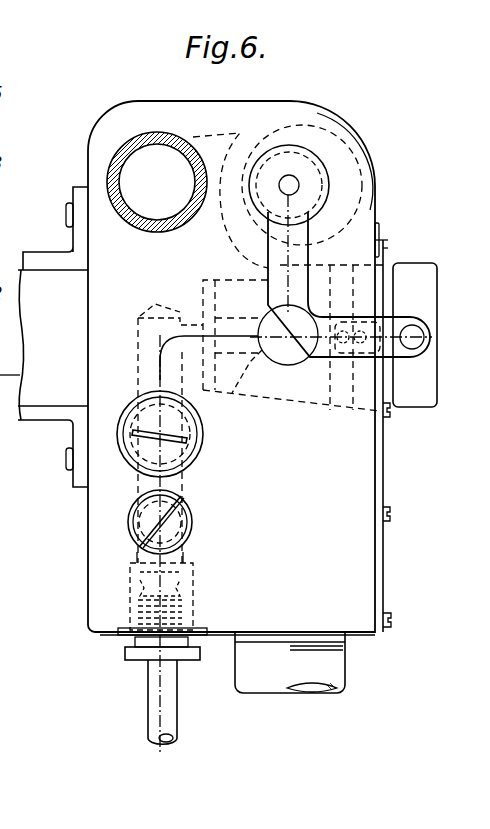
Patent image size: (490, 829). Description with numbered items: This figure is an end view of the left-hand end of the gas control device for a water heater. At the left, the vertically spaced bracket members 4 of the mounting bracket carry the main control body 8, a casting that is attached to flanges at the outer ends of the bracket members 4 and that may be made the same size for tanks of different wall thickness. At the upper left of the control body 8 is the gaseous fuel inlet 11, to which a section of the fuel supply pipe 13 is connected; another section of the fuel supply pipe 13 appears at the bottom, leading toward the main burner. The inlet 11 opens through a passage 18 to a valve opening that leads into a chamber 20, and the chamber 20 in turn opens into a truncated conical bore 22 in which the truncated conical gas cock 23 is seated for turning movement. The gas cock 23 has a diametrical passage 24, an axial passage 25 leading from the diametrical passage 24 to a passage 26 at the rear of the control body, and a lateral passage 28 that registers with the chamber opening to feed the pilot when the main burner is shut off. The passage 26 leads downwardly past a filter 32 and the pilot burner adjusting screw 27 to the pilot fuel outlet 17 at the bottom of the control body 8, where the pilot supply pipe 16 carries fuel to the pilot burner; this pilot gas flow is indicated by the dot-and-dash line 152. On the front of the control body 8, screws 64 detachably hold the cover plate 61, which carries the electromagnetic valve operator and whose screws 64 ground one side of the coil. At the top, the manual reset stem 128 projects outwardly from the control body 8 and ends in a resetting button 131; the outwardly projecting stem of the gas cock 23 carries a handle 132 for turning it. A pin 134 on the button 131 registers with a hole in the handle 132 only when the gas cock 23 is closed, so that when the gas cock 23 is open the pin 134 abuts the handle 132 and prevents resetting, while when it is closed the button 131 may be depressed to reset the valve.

The bracket members 4 is at (43, 252).
The main control body 8 is at (80, 524).
The gaseous fuel inlet 11 is at (148, 120).
The fuel supply pipe 13 is at (135, 150).
The pilot supply pipe 16 is at (153, 712).
The pilot fuel outlet 17 is at (135, 643).
The passage 18 is at (193, 136).
The chamber 20 is at (298, 130).
The truncated conical bore 22 is at (342, 408).
The gas cock 23 is at (303, 383).
The diametrical passage 24 is at (290, 363).
The axial passage 25 is at (236, 392).
The passage 26 is at (143, 346).
The pilot burner adjusting screw 27 is at (178, 530).
The passage 28 is at (270, 285).
The filter 32 is at (196, 458).
The cover plate 61 is at (385, 497).
The screws 64 is at (391, 412).
The manual reset stem 128 is at (302, 166).
The resetting button 131 is at (312, 186).
The handle 132 is at (412, 393).
The pin 134 is at (421, 327).
The dot-and-dash line 152 is at (166, 344).